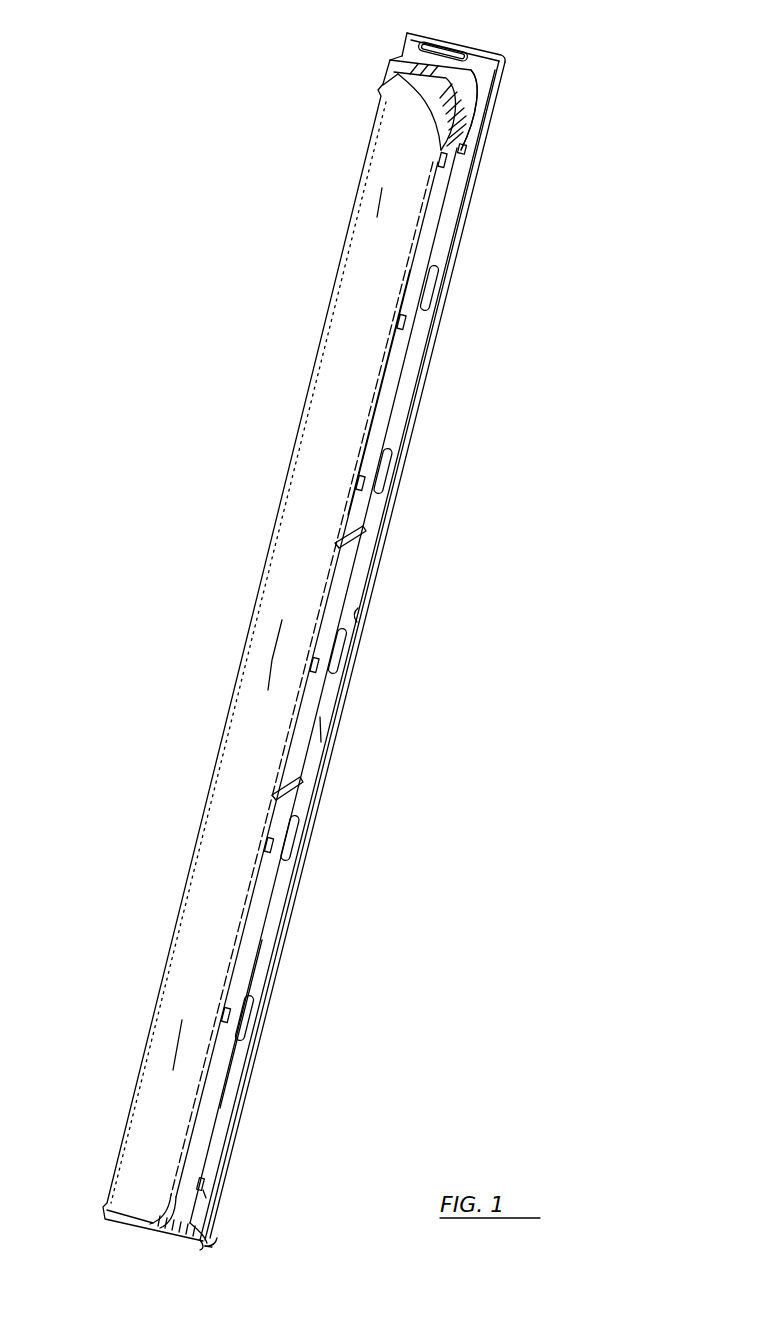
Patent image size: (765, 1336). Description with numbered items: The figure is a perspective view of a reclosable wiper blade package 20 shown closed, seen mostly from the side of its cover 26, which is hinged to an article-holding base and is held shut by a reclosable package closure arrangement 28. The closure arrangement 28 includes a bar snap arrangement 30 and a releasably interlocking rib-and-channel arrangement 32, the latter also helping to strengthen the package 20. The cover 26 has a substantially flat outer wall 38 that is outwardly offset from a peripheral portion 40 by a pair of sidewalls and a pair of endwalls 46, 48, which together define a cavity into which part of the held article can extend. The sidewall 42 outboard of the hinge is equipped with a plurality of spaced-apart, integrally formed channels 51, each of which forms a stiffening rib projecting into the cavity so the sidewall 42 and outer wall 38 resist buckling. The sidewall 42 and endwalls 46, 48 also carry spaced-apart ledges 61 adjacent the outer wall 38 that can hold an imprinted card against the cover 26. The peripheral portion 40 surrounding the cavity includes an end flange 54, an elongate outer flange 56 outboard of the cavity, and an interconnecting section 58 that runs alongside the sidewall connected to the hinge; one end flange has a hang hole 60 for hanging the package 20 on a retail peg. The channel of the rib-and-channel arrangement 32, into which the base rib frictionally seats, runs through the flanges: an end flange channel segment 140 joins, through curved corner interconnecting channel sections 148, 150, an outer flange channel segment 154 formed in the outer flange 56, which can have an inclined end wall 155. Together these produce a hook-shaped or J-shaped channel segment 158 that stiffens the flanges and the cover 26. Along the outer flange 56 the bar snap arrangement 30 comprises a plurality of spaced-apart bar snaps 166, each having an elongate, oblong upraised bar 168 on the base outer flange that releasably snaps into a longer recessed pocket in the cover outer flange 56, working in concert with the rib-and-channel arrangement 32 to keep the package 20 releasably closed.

The reclosable package 20 is at (258, 248).
The cover 26 is at (135, 1018).
The reclosable package closure arrangement 28 is at (442, 250).
The bar snap arrangement 30 is at (256, 1034).
The releasably interlocking rib-and-channel arrangement 32 is at (492, 82).
The outer wall 38 is at (278, 642).
The peripheral portion 40 is at (311, 718).
The sidewall 42 is at (346, 578).
The endwall 46 is at (160, 1230).
The endwall 48 is at (438, 88).
The channel 51 is at (372, 524).
The end flange 54 is at (208, 1240).
The outer flange 56 is at (357, 613).
The interconnecting section 58 is at (406, 43).
The hang hole 60 is at (441, 50).
The ledge 61 is at (447, 162).
The end flange channel segment 140 is at (436, 50).
The curved corner interconnecting channel section 148 is at (482, 74).
The curved corner interconnecting channel section 150 is at (207, 1236).
The outer flange channel segment 154 is at (205, 1196).
The inclined end wall 155 is at (467, 152).
The J-shaped channel segment 158 is at (212, 1248).
The bar snap 166 is at (438, 288).
The upraised bar 168 is at (392, 456).